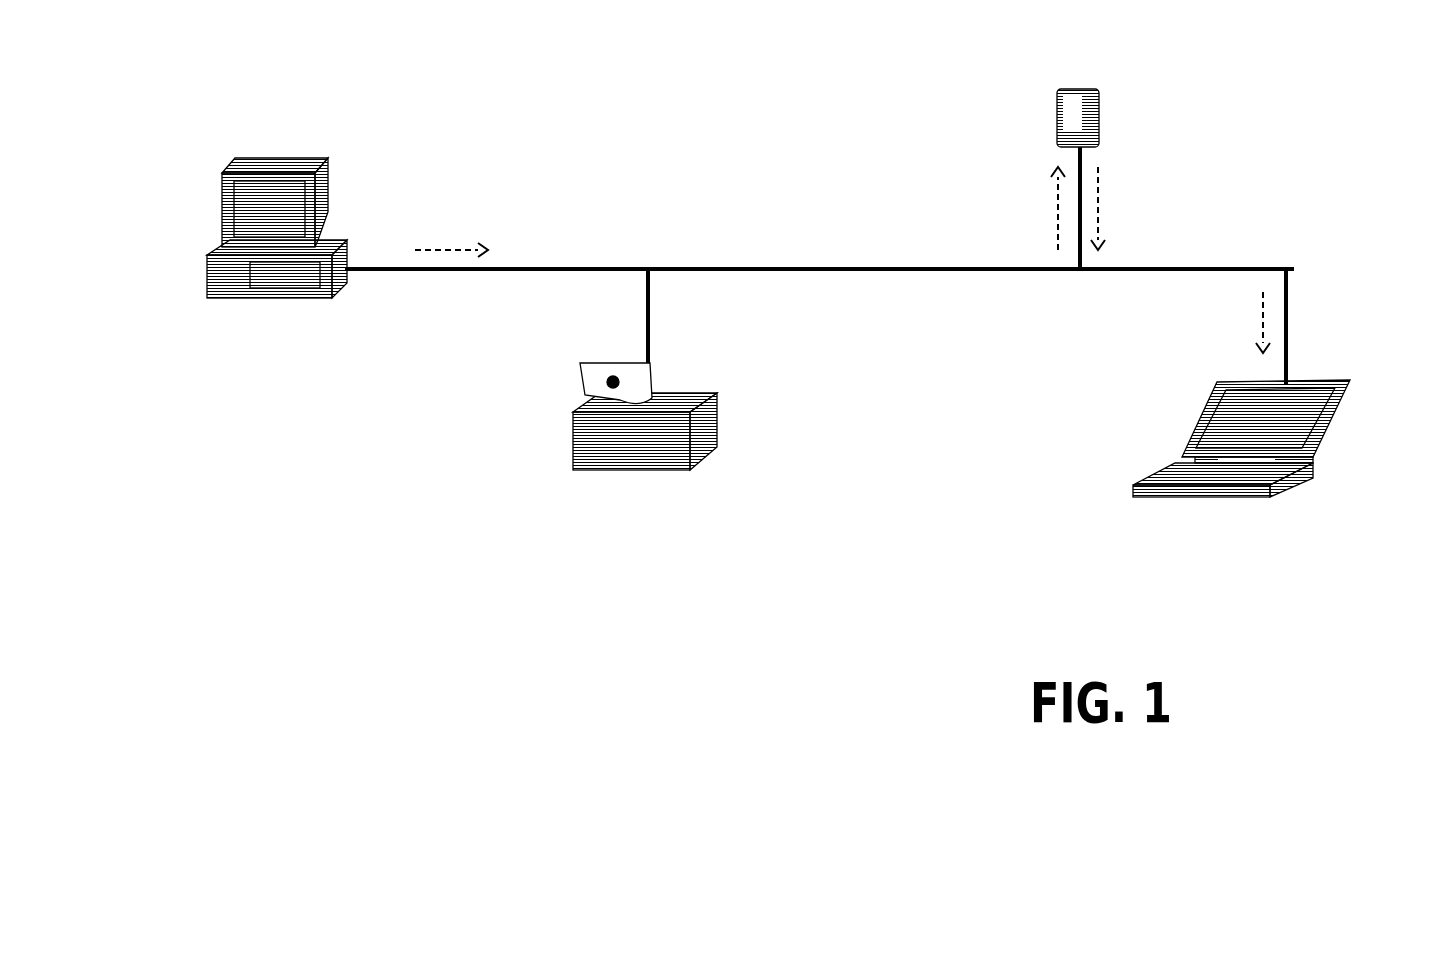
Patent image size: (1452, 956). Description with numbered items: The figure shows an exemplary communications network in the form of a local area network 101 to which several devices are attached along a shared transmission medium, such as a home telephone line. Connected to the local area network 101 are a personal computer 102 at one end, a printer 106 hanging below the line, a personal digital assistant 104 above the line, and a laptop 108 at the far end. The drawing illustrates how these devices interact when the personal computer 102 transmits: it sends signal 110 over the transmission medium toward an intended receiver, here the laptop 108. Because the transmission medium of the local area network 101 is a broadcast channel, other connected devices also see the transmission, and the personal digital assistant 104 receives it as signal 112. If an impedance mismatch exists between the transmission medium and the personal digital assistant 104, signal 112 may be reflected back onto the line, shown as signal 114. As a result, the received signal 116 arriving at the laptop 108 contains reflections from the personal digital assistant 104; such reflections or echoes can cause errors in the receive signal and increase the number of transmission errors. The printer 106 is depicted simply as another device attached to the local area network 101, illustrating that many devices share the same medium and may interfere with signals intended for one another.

The local area network 101 is at (707, 268).
The personal computer 102 is at (222, 205).
The personal digital assistant 104 is at (1097, 98).
The printer 106 is at (708, 427).
The laptop 108 is at (1320, 442).
The signal 110 is at (445, 250).
The signal 112 is at (1058, 212).
The signal 114 is at (1098, 212).
The received signal 116 is at (1263, 316).